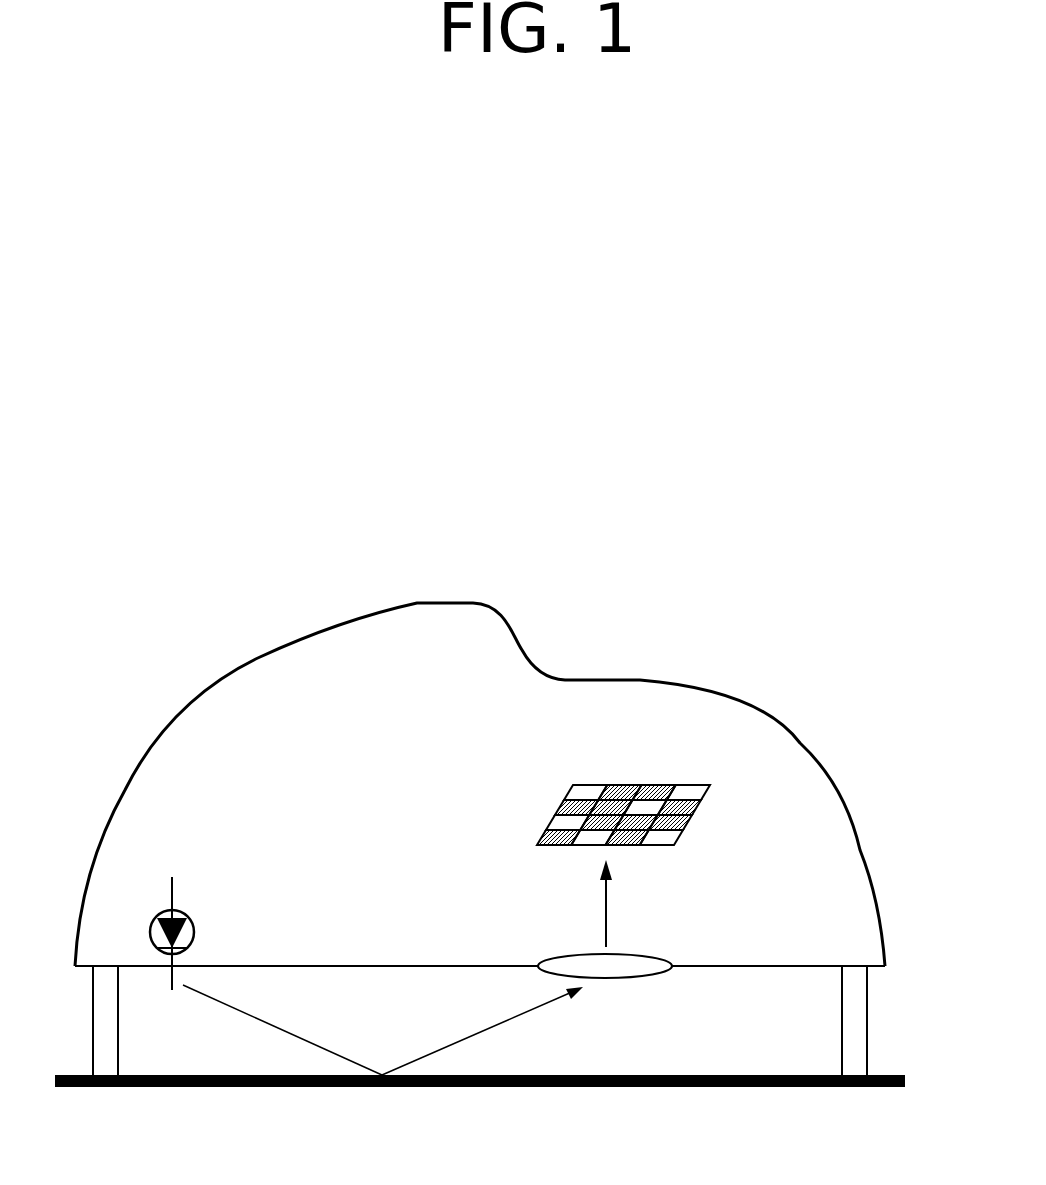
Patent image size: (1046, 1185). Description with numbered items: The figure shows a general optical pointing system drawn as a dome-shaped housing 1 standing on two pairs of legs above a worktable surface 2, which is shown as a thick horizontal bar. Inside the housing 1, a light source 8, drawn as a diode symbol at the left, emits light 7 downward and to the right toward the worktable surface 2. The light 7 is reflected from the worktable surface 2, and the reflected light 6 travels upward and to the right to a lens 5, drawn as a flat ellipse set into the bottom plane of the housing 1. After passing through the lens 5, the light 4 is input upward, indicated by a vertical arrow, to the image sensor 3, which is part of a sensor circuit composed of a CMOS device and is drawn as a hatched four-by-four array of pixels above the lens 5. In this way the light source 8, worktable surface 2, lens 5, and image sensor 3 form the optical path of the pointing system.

The housing (dome cover) 1 is at (802, 743).
The worktable surface 2 is at (620, 1088).
The image sensor 3 is at (650, 782).
The light 4 is at (602, 887).
The lens 5 is at (660, 955).
The reflected light 6 is at (457, 1040).
The light 7 is at (285, 1030).
The light source 8 is at (195, 932).